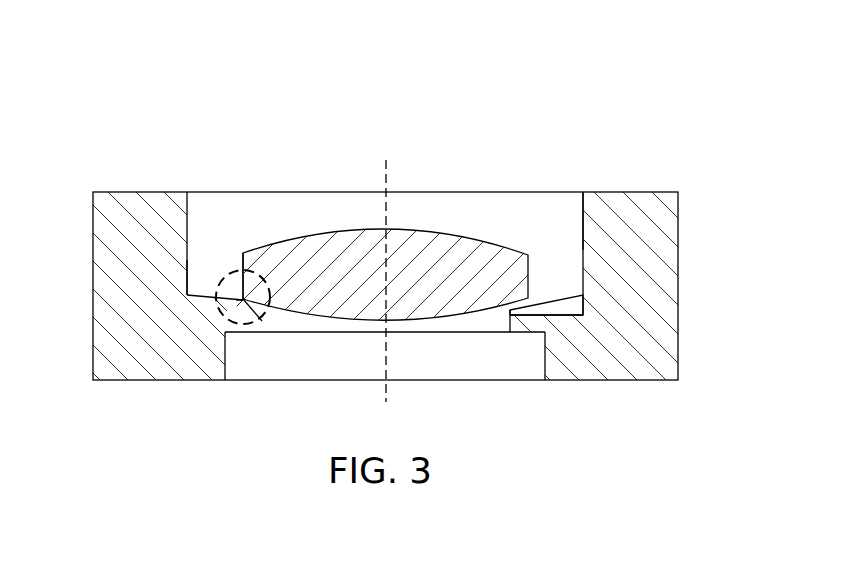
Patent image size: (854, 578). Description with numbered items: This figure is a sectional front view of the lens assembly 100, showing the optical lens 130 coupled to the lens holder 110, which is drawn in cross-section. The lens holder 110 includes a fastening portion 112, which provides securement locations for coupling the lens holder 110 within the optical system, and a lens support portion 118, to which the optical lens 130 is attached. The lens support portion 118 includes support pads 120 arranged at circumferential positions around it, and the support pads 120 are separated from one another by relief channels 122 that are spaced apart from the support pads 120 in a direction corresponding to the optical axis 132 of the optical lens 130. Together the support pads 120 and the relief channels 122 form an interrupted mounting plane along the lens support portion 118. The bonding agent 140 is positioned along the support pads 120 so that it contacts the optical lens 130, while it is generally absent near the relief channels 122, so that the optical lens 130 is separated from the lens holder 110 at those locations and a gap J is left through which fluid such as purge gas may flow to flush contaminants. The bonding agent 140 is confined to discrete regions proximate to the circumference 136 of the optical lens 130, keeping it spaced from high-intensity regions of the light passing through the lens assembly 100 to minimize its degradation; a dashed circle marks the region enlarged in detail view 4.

The lens assembly 100 is at (634, 105).
The lens holder 110 is at (124, 157).
The fastening portion 112 is at (628, 192).
The lens support portion 118 is at (204, 285).
The support pads 120 is at (263, 320).
The relief channels 122 is at (558, 295).
The optical lens 130 is at (398, 216).
The optical axis 132 is at (384, 168).
The circumference 136 is at (243, 272).
The bonding agent 140 is at (243, 298).
The detail view circle 4 is at (270, 296).
The gap J is at (262, 321).